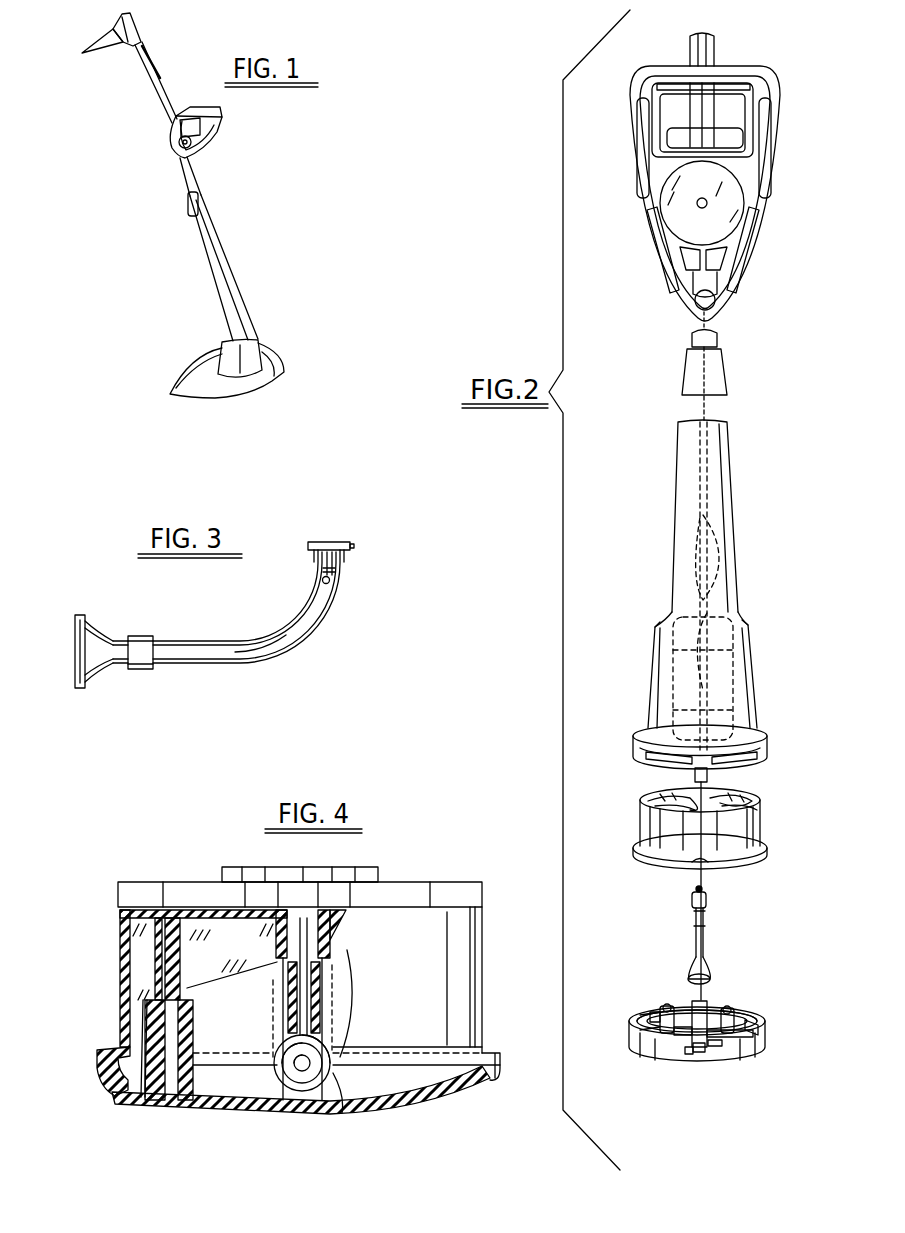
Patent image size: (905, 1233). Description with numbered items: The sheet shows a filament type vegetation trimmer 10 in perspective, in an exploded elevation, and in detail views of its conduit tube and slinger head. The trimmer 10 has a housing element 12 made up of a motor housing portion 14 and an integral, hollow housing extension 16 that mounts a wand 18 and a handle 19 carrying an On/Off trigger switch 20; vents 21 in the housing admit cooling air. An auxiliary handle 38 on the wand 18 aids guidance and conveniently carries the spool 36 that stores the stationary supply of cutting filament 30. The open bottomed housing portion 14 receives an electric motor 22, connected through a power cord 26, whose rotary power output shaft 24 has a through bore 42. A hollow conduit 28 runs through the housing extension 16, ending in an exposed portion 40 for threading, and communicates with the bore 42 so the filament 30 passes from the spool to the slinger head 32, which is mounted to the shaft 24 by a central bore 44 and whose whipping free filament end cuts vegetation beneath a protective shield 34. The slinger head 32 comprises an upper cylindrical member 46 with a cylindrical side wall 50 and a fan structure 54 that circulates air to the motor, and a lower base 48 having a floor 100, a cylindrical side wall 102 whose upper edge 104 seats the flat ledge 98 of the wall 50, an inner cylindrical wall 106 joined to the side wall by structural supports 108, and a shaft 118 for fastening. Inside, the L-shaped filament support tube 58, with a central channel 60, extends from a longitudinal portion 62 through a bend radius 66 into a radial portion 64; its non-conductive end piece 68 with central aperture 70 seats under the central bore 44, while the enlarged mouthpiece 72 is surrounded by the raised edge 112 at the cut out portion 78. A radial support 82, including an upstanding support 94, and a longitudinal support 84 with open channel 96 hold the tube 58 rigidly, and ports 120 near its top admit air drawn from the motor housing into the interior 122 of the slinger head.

In FIG. 1, the filament type vegetation trimmer 10 is at (262, 245).
In FIG. 2, the filament type vegetation trimmer 10 is at (657, 609).
In FIG. 1, the housing element 12 is at (247, 299).
In FIG. 2, the housing element 12 is at (747, 619).
In FIG. 1, the housing portion 14 is at (258, 346).
In FIG. 2, the housing portion 14 is at (744, 678).
In FIG. 1, the housing extension 16 is at (218, 238).
In FIG. 2, the housing extension 16 is at (733, 507).
In FIG. 1, the wand 18 is at (157, 68).
In FIG. 2, the wand 18 is at (712, 52).
In FIG. 1, the handle 19 is at (114, 18).
In FIG. 1, the On/Off trigger switch 20 is at (116, 38).
In FIG. 1, the vents 21 is at (192, 214).
In FIG. 2, the electric motor 22 is at (721, 694).
In FIG. 2, the power output shaft 24 is at (707, 768).
In FIG. 2, the power cord 26 is at (703, 515).
In FIG. 2, the conduit 28 is at (717, 397).
In FIG. 2, the cutting filament 30 is at (703, 1057).
In FIG. 4, the slinger head 32 is at (482, 995).
In FIG. 1, the shield 34 is at (188, 361).
In FIG. 2, the spool 36 is at (720, 211).
In FIG. 1, the auxiliary handle 38 is at (222, 122).
In FIG. 2, the auxiliary handle 38 is at (777, 147).
In FIG. 2, the exposed portion 40 is at (713, 342).
In FIG. 2, the bore 42 is at (707, 613).
In FIG. 2, the central bore 44 is at (700, 793).
In FIG. 4, the upper cylindrical member 46 is at (482, 927).
In FIG. 2, the upper cylindrical member 46 is at (746, 825).
In FIG. 4, the lower base 48 is at (458, 1092).
In FIG. 2, the lower base 48 is at (743, 1050).
In FIG. 4, the cylindrical side wall 50 is at (436, 962).
In FIG. 4, the fan structure 54 is at (147, 881).
In FIG. 3, the filament support tube 58 is at (285, 639).
In FIG. 2, the filament support tube 58 is at (704, 918).
In FIG. 3, the central channel 60 is at (71, 635).
In FIG. 4, the central channel 60 is at (300, 1072).
In FIG. 2, the central channel 60 is at (710, 980).
In FIG. 3, the longitudinal portion 62 is at (318, 622).
In FIG. 3, the radial portion 64 is at (200, 671).
In FIG. 3, the bend radius 66 is at (262, 628).
In FIG. 2, the bend radius 66 is at (696, 935).
In FIG. 3, the end piece 68 is at (350, 545).
In FIG. 2, the end piece 68 is at (707, 897).
In FIG. 3, the central aperture 70 is at (340, 536).
In FIG. 2, the central aperture 70 is at (694, 889).
In FIG. 3, the mouthpiece 72 is at (110, 654).
In FIG. 4, the mouthpiece 72 is at (326, 1078).
In FIG. 2, the cut out portion 78 is at (700, 1050).
In FIG. 2, the radial support 82 is at (712, 1047).
In FIG. 2, the longitudinal support 84 is at (708, 1013).
In FIG. 2, the upstanding support 94 is at (697, 1033).
In FIG. 2, the open channel 96 is at (685, 1013).
In FIG. 4, the ledge 98 is at (125, 1047).
In FIG. 2, the ledge 98 is at (759, 850).
In FIG. 4, the floor 100 is at (213, 1105).
In FIG. 2, the floor 100 is at (670, 1023).
In FIG. 4, the cylindrical side wall 102 is at (495, 1075).
In FIG. 2, the cylindrical side wall 102 is at (760, 1033).
In FIG. 4, the upper edge 104 is at (100, 1063).
In FIG. 4, the inner cylindrical wall 106 is at (114, 1095).
In FIG. 2, the structural supports 108 is at (753, 1023).
In FIG. 2, the raised edge 112 is at (697, 1054).
In FIG. 2, the shaft 118 is at (653, 1020).
In FIG. 3, the ports 120 is at (329, 582).
In FIG. 4, the interior 122 is at (143, 947).